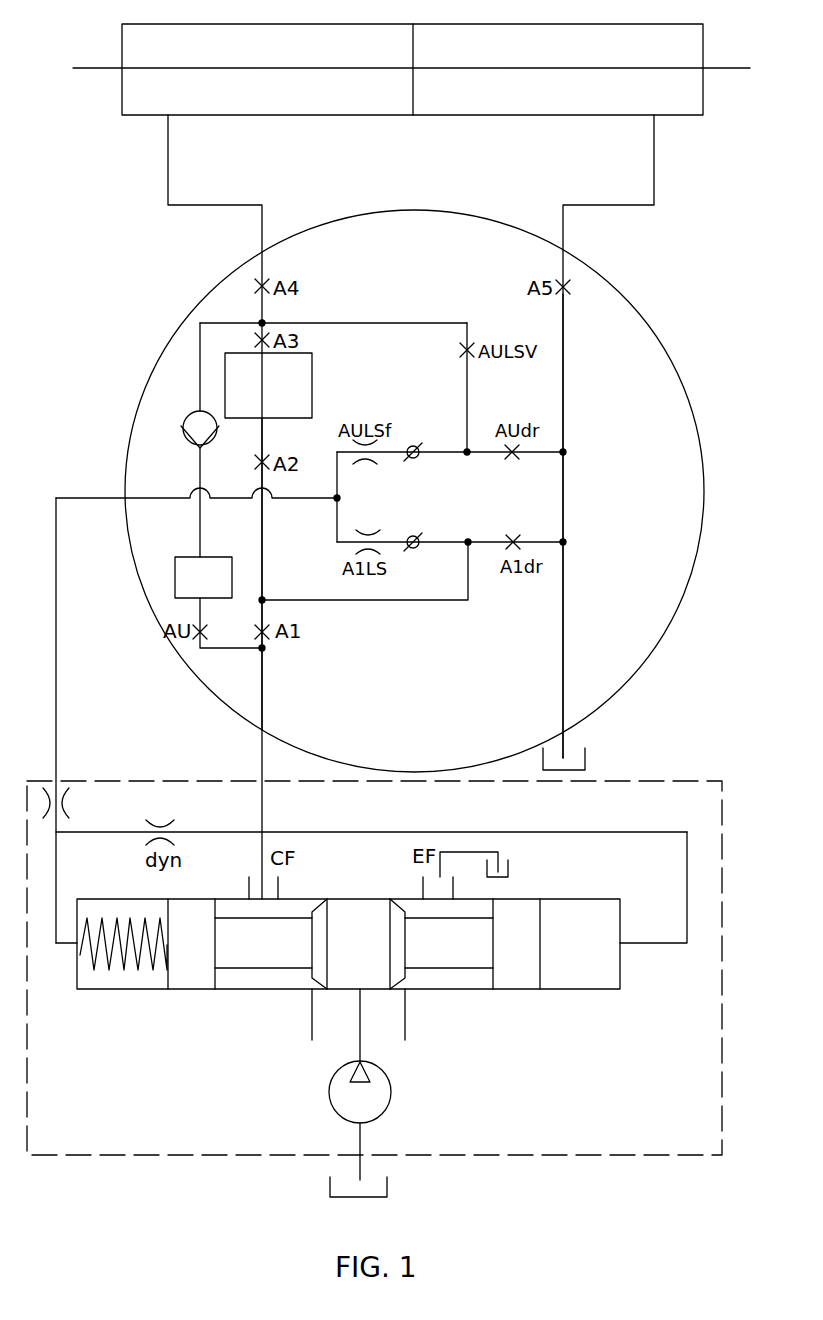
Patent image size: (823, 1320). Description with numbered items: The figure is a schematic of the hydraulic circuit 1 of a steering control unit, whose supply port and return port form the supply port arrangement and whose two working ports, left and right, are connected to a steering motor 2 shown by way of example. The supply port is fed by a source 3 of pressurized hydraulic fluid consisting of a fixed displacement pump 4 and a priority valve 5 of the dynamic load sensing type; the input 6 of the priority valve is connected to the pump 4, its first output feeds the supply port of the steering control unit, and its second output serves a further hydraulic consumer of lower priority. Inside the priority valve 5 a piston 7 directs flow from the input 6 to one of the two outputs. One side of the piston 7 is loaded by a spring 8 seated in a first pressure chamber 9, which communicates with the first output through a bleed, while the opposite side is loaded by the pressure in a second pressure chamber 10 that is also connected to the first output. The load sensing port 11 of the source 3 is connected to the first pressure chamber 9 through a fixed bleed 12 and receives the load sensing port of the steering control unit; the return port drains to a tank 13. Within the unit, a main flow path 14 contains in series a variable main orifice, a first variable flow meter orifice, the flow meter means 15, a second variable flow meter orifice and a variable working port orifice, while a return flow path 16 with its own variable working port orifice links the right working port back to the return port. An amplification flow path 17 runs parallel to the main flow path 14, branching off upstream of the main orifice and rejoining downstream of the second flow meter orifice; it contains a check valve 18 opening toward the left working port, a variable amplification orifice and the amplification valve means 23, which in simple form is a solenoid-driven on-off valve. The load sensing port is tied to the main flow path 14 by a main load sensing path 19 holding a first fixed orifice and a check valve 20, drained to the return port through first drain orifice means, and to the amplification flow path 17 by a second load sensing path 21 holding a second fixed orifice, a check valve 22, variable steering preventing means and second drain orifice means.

The hydraulic circuit 1 is at (703, 528).
The steering motor 2 is at (698, 45).
The source 3 is at (702, 796).
The fixed displacement pump 4 is at (383, 1099).
The priority valve 5 is at (480, 989).
The input 6 is at (325, 1013).
The piston 7 is at (250, 950).
The spring 8 is at (118, 960).
The first pressure chamber 9 is at (143, 982).
The second pressure chamber 10 is at (585, 978).
The load sensing port 11 is at (56, 777).
The fixed bleed 12 is at (60, 803).
The tank 13 is at (585, 760).
The main flow path 14 is at (263, 548).
The flow meter means 15 is at (312, 381).
The return flow path 16 is at (563, 407).
The amplification flow path 17 is at (200, 532).
The check valve 18 is at (188, 442).
The main load sensing path 19 is at (445, 540).
The check valve 20 is at (413, 548).
The second load sensing path 21 is at (443, 448).
The check valve 22 is at (410, 459).
The amplification valve means 23 is at (175, 577).